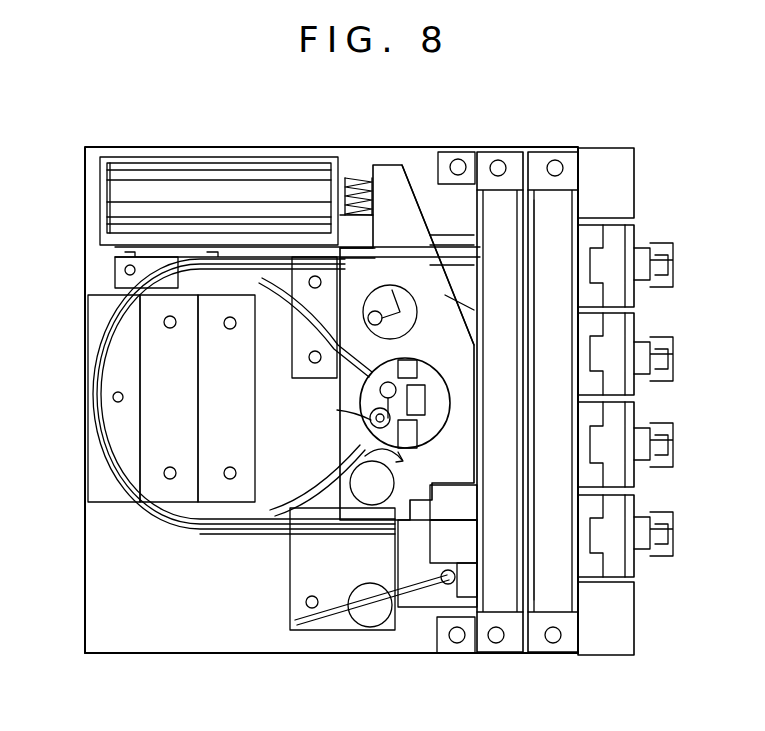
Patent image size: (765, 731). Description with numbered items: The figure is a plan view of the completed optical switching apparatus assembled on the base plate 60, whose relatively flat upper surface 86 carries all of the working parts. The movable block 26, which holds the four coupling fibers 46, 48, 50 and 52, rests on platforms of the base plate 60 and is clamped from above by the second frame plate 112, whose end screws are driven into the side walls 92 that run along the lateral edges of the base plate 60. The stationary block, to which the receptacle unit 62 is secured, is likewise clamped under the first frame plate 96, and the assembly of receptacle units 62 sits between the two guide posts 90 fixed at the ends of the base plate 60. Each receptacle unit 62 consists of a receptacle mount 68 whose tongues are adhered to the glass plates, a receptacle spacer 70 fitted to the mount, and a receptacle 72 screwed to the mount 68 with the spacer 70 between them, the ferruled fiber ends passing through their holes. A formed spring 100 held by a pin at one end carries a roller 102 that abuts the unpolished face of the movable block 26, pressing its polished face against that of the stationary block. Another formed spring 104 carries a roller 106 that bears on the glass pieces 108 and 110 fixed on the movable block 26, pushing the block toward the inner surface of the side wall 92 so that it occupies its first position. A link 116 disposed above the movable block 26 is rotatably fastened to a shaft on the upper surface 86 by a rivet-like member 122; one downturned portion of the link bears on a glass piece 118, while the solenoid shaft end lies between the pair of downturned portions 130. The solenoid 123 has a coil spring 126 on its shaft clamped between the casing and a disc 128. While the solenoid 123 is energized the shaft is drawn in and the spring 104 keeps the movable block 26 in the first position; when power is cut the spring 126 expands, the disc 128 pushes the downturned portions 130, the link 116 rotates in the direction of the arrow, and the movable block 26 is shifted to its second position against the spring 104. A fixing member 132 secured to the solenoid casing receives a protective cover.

The movable block 26 is at (427, 193).
The coupling fiber 46 is at (244, 537).
The coupling fiber 48 is at (318, 525).
The coupling fiber 50 is at (256, 270).
The coupling fiber 52 is at (318, 336).
The base plate 60 is at (85, 545).
The receptacle unit 62 is at (628, 232).
The receptacle mount 68 is at (578, 551).
The receptacle spacer 70 is at (618, 508).
The receptacle 72 is at (668, 342).
The upper surface 86 is at (254, 653).
The guide post 90 is at (628, 174).
The side wall 92 is at (454, 653).
The first frame plate 96 is at (570, 155).
The formed spring 100 is at (338, 411).
The roller 102 is at (386, 384).
The formed spring 104 is at (402, 588).
The roller 106 is at (462, 585).
The glass piece 108 is at (468, 544).
The glass piece 110 is at (466, 578).
The second frame plate 112 is at (518, 155).
The link 116 is at (408, 236).
The glass piece 118 is at (468, 504).
The rivet-like member 122 is at (358, 466).
The solenoid 123 is at (196, 178).
The coil spring 126 is at (356, 180).
The disc 128 is at (377, 178).
The downturned portions 130 is at (402, 458).
The fixing member 132 is at (92, 333).